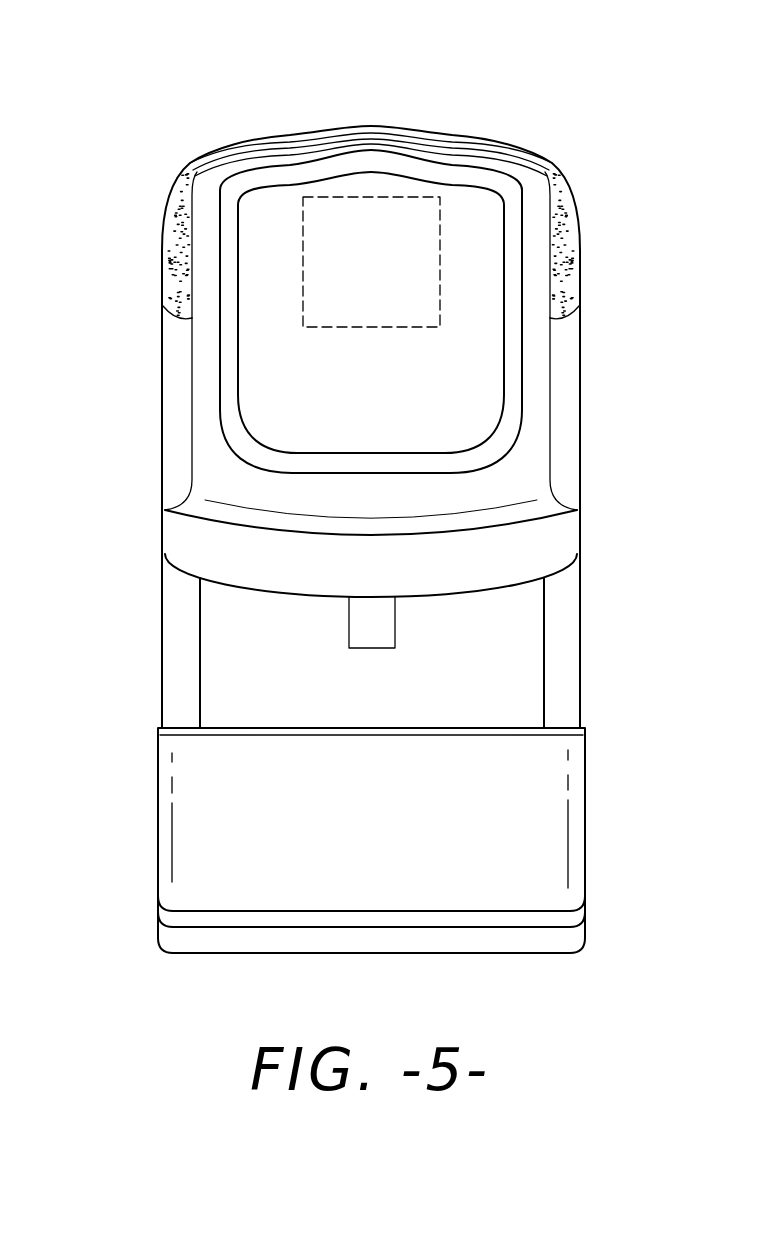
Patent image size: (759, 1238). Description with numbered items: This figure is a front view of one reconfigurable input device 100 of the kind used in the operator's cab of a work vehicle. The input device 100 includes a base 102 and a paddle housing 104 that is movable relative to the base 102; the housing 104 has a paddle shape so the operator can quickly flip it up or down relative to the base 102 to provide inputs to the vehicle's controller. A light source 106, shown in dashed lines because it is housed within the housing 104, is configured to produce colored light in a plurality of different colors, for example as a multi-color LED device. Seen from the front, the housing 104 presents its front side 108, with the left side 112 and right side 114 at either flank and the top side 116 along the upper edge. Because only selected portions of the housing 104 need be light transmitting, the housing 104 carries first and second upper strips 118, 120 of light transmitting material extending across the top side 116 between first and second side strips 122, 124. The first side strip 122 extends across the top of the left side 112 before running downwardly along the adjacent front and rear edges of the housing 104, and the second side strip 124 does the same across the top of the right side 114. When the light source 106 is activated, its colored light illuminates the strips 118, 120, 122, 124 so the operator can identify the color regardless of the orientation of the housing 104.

The reconfigurable input device 100 is at (130, 82).
The base 102 is at (465, 880).
The paddle housing 104 is at (528, 552).
The light source 106 is at (410, 197).
The front side 108 is at (472, 380).
The left side 112 is at (160, 372).
The right side 114 is at (582, 372).
The top side 116 is at (381, 126).
The first upper strip 118 is at (268, 140).
The second upper strip 120 is at (371, 116).
The first side strip 122 is at (170, 248).
The second side strip 124 is at (572, 248).